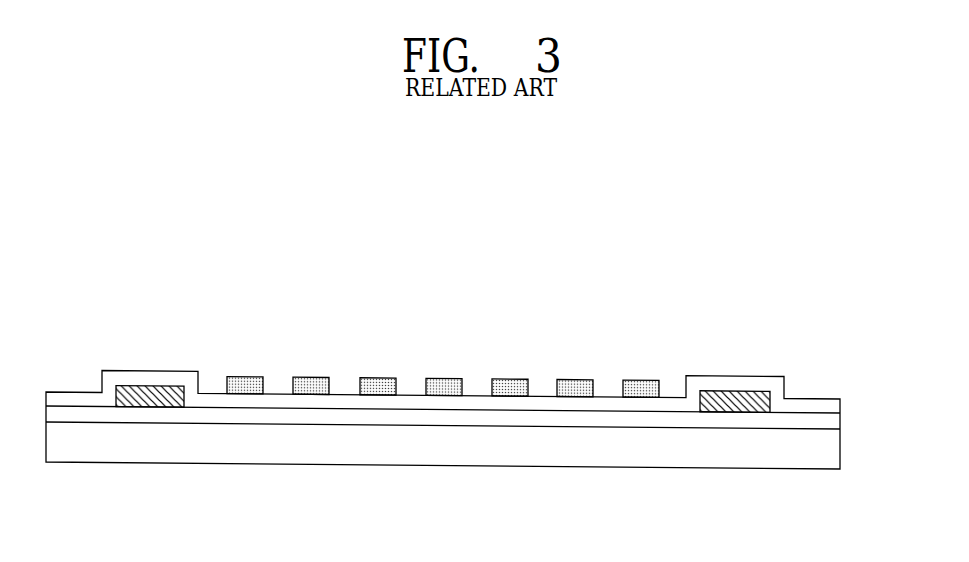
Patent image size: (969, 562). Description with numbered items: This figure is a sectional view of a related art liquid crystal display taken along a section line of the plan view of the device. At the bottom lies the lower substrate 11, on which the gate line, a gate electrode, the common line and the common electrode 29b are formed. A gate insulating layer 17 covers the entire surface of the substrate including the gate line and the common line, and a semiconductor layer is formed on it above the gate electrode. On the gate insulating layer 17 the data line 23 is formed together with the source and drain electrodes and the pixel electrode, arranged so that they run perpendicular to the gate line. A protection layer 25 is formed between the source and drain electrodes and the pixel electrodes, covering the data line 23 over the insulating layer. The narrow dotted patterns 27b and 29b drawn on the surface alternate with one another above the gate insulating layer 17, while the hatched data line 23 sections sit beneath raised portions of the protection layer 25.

The lower substrate 11 is at (836, 455).
The gate insulating layer 17 is at (836, 425).
The data line 23 is at (148, 388).
The protection layer 25 is at (836, 405).
The first conductive pattern 27b is at (310, 378).
The common electrode 29b is at (244, 377).